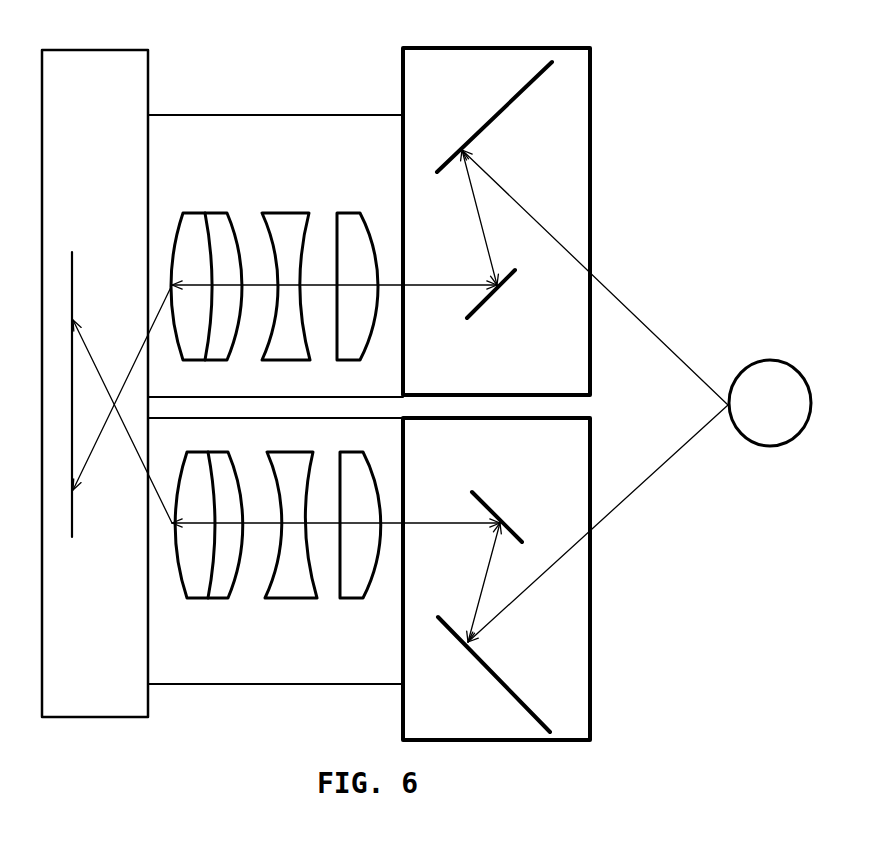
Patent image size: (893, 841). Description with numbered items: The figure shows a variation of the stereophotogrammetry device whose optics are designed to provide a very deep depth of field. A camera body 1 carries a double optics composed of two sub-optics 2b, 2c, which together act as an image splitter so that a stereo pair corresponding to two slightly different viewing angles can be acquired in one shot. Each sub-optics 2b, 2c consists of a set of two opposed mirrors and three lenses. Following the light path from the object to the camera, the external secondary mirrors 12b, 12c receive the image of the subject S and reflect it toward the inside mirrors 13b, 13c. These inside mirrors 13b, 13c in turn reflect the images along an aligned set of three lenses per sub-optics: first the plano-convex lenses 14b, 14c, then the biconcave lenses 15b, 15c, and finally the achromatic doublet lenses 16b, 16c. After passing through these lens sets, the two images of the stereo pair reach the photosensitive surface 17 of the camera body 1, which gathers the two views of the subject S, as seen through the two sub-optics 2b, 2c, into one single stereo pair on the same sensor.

The camera body 1 is at (112, 108).
The photosensitive surface 17 is at (73, 283).
The sub-optics 2b is at (588, 163).
The sub-optics 2c is at (577, 592).
The secondary mirror 12b is at (500, 112).
The inside mirror 13b is at (488, 300).
The secondary mirror 12c is at (533, 712).
The inside mirror 13c is at (483, 507).
The plano-convex lens 14b is at (352, 227).
The biconcave lens 15b is at (288, 227).
The achromatic doublet lens 16b is at (213, 225).
The plano-convex lens 14c is at (355, 588).
The biconcave lens 15c is at (290, 585).
The achromatic doublet lens 16c is at (218, 583).
The subject S is at (757, 375).